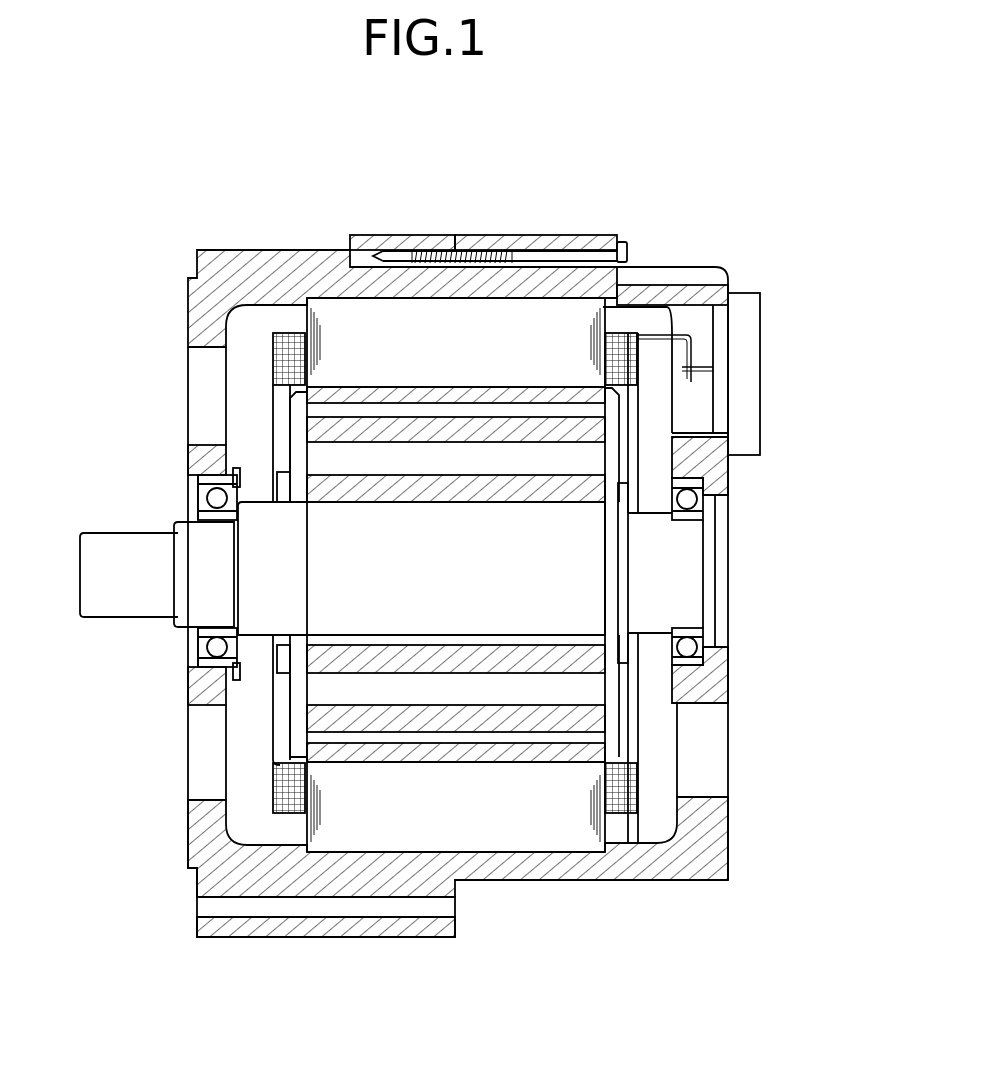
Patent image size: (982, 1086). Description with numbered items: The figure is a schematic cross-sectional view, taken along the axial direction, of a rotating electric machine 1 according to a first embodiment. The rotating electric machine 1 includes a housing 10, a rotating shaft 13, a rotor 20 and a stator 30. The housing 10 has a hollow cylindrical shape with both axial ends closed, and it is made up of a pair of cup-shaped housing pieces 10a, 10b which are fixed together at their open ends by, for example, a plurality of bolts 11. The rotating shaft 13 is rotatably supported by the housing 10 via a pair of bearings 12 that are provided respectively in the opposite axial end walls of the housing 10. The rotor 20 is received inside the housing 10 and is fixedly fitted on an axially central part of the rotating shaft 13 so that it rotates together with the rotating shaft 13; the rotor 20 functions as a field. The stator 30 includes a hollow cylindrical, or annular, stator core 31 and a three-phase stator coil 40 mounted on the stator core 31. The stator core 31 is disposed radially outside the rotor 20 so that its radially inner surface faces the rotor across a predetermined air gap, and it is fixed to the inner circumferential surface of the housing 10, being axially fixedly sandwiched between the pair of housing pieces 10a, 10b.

The rotating electric machine 1 is at (740, 203).
The housing 10 is at (517, 95).
The housing piece 10a is at (367, 248).
The housing piece 10b is at (478, 243).
The bolt 11 is at (565, 258).
The bearing 12 is at (207, 485).
The rotating shaft 13 is at (133, 597).
The rotor 20 is at (595, 425).
The stator 30 is at (617, 955).
The stator core 31 is at (527, 808).
The stator coil 40 is at (622, 813).